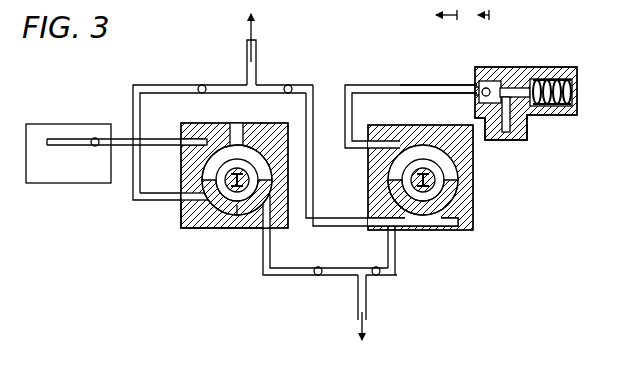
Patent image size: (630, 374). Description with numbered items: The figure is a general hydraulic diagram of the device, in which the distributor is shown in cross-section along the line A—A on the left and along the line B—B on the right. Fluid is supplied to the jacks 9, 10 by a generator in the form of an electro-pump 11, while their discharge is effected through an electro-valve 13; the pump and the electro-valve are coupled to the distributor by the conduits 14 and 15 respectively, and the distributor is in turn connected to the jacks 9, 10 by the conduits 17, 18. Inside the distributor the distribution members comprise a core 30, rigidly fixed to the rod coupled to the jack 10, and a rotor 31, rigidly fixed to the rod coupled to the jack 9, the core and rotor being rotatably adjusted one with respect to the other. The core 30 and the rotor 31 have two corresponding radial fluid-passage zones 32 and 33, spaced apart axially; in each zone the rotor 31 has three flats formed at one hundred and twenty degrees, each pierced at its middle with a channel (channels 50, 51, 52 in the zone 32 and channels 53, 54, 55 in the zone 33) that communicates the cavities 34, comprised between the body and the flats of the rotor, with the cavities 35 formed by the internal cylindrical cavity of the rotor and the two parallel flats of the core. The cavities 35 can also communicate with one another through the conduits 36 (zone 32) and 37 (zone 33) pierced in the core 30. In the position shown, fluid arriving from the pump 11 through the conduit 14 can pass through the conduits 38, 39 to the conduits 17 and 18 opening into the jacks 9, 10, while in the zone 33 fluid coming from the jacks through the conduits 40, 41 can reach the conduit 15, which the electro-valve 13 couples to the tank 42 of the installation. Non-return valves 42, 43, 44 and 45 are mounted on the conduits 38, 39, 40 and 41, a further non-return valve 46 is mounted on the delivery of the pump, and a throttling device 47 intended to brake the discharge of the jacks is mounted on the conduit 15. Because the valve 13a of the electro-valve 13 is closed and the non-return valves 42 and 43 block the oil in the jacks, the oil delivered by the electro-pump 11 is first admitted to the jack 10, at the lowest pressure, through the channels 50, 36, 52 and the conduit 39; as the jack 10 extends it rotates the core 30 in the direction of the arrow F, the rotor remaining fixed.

The jack 9 is at (369, 333).
The jack 10 is at (264, 37).
The electro-pump 11 is at (68, 124).
The electro-valve 13 is at (548, 67).
The valve of the electro-valve 13a is at (485, 86).
The conduit 14 is at (157, 138).
The conduit 15 is at (372, 85).
The conduit 17 is at (357, 305).
The conduit 18 is at (247, 68).
The core 30 is at (205, 158).
The rotor 31 is at (255, 170).
The radial fluid-passage zone 32 is at (178, 233).
The radial fluid-passage zone 33 is at (466, 236).
The cavities 34 is at (185, 212).
The cavities 35 is at (220, 205).
The conduit 36 is at (262, 158).
The conduit 37 is at (395, 172).
The conduit 38 is at (267, 265).
The conduit 39 is at (170, 90).
The conduit 40 is at (398, 250).
The conduit 41 is at (312, 82).
The non-return valve 42 is at (318, 276).
The non-return valve 43 is at (202, 85).
The non-return valve 44 is at (380, 276).
The non-return valve 45 is at (288, 85).
The non-return valve 46 is at (95, 147).
The throttling device 47 is at (445, 85).
The channel 50 is at (236, 150).
The channel 51 is at (250, 181).
The channel 52 is at (205, 187).
The channel 53 is at (455, 193).
The channel 54 is at (400, 185).
The channel 55 is at (432, 150).
The arrow F is at (234, 215).
The section line A— A is at (452, 21).
The section line B— B is at (491, 14).